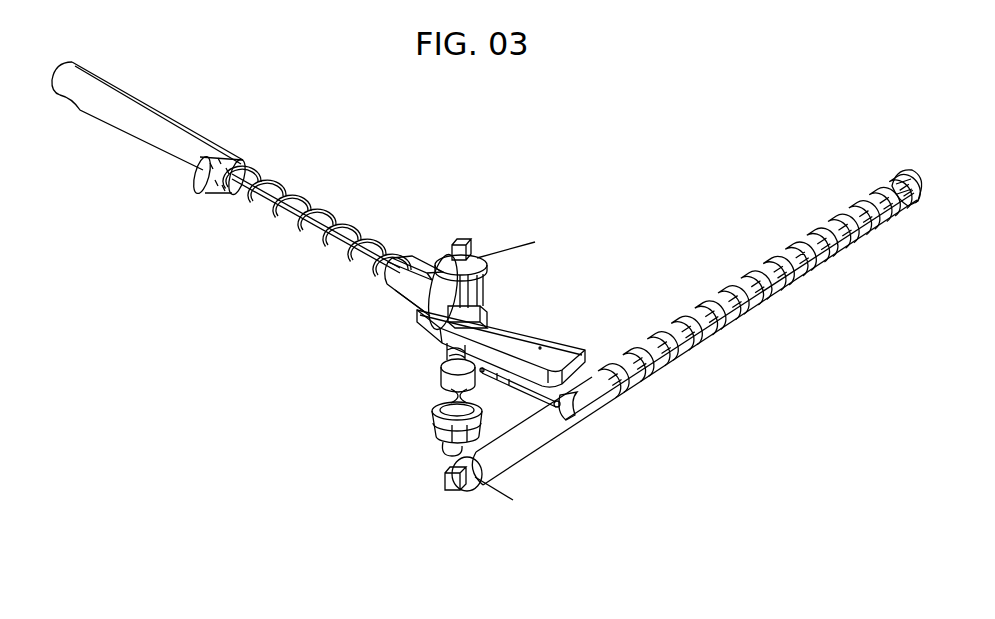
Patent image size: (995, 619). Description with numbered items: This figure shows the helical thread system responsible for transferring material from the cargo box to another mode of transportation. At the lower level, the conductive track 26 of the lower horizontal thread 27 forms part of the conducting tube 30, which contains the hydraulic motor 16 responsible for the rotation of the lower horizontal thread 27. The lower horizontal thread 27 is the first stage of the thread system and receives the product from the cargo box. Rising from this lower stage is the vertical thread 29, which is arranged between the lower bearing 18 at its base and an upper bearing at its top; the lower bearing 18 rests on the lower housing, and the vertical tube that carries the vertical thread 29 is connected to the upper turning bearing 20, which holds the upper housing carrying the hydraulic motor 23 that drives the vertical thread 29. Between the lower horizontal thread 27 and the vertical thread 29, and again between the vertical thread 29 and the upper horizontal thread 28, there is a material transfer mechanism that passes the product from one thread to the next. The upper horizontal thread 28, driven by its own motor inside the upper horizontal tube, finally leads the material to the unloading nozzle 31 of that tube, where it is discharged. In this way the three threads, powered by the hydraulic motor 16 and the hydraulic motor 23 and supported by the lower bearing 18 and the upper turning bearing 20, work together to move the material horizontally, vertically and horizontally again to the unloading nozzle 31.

The hydraulic motor 16 is at (455, 488).
The lower bearing 18 is at (435, 430).
The upper turning bearing 20 is at (505, 338).
The hydraulic motor 23 is at (468, 240).
The conductive track 26 is at (858, 243).
The lower horizontal thread 27 is at (800, 242).
The upper horizontal thread 28 is at (323, 228).
The vertical thread 29 is at (440, 395).
The conducting tube 30 is at (513, 450).
The unloading nozzle 31 is at (72, 92).